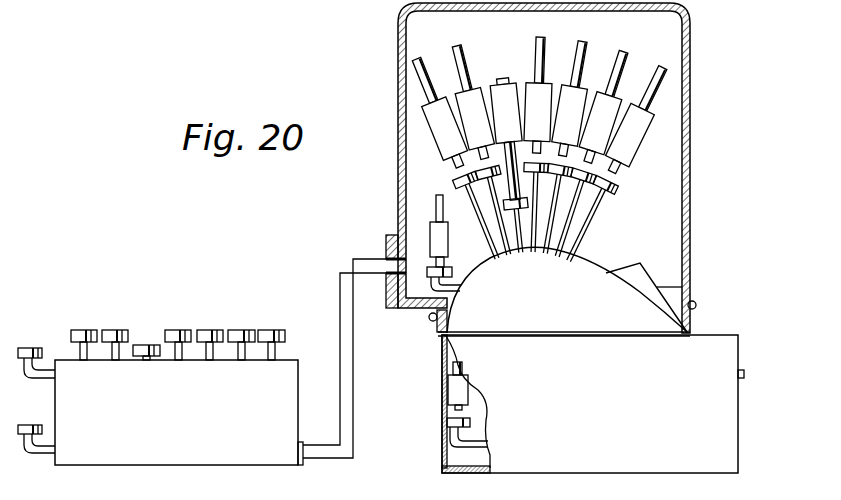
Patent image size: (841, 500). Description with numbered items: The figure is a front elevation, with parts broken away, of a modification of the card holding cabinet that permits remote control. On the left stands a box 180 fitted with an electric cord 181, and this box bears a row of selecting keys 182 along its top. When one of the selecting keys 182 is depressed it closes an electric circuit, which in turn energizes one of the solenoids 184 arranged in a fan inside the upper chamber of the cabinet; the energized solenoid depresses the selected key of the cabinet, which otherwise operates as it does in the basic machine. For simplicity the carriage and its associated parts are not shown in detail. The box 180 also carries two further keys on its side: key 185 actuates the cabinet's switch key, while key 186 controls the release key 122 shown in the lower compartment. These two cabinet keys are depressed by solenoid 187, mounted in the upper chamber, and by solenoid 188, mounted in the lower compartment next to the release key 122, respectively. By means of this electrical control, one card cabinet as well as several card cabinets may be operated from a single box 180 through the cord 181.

The release key 122 is at (442, 425).
The box 180 is at (63, 408).
The electric cord 181 is at (350, 410).
The selecting keys 182 is at (210, 330).
The solenoids 184 is at (627, 136).
The key 185 is at (30, 348).
The key 186 is at (45, 446).
The solenoid 187 is at (436, 213).
The solenoid 188 is at (450, 393).